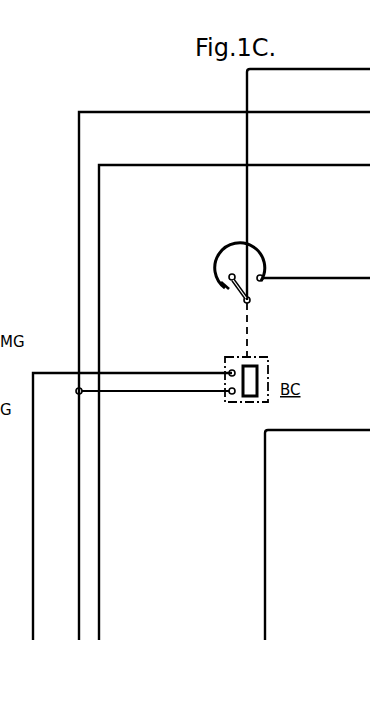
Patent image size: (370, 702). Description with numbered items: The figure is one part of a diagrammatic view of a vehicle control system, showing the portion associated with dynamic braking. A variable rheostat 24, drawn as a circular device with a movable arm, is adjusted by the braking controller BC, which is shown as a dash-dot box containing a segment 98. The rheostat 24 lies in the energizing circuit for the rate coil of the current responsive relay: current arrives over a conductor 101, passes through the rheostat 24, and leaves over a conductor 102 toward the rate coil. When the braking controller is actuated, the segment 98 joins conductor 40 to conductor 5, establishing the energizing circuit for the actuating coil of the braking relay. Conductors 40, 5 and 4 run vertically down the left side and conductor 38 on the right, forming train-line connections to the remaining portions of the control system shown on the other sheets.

The conductor 102 is at (354, 62).
The conductor 5 is at (343, 100).
The line 4 is at (343, 153).
The conductor 40 is at (32, 610).
The conductor 101 is at (348, 278).
The variable rheostat 24 is at (272, 304).
The segment 98 is at (258, 379).
The line 38 is at (330, 430).